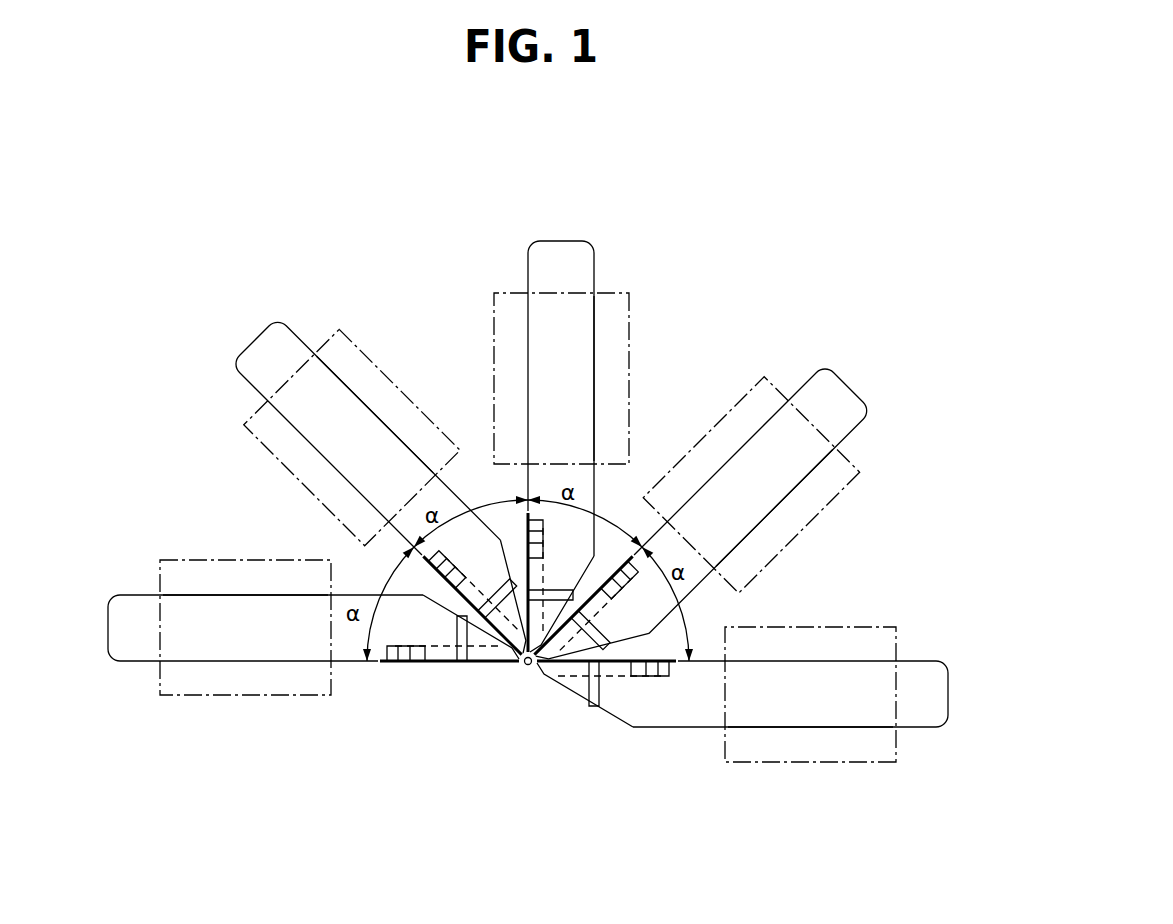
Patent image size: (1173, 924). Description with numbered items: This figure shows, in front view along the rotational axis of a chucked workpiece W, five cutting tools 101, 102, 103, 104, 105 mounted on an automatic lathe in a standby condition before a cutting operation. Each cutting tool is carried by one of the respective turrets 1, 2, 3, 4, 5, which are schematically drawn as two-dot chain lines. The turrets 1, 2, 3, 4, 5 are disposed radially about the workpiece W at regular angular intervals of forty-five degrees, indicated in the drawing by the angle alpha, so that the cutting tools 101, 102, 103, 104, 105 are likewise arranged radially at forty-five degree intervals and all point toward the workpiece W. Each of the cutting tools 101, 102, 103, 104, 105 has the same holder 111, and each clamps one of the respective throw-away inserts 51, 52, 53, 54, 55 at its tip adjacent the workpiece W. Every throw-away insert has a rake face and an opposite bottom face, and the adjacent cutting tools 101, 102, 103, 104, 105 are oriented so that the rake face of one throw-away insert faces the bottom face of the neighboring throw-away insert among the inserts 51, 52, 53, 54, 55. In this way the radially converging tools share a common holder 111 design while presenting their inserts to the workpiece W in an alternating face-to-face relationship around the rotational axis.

The turret 1 is at (195, 696).
The turret 2 is at (250, 438).
The turret 3 is at (632, 327).
The turret 4 is at (843, 494).
The turret 5 is at (832, 763).
The throw-away insert 51 is at (488, 673).
The throw-away insert 52 is at (505, 620).
The throw-away insert 53 is at (547, 617).
The throw-away insert 54 is at (575, 632).
The throw-away insert 55 is at (563, 672).
The cutting tool 101 is at (340, 663).
The cutting tool 102 is at (297, 333).
The cutting tool 103 is at (528, 275).
The cutting tool 104 is at (693, 490).
The cutting tool 105 is at (836, 657).
The holder 111 is at (225, 592).
The workpiece W is at (527, 667).